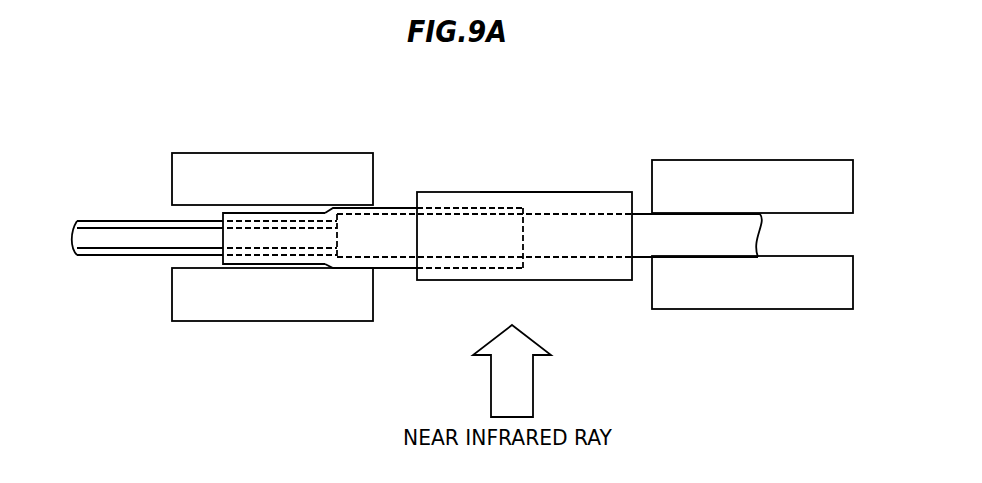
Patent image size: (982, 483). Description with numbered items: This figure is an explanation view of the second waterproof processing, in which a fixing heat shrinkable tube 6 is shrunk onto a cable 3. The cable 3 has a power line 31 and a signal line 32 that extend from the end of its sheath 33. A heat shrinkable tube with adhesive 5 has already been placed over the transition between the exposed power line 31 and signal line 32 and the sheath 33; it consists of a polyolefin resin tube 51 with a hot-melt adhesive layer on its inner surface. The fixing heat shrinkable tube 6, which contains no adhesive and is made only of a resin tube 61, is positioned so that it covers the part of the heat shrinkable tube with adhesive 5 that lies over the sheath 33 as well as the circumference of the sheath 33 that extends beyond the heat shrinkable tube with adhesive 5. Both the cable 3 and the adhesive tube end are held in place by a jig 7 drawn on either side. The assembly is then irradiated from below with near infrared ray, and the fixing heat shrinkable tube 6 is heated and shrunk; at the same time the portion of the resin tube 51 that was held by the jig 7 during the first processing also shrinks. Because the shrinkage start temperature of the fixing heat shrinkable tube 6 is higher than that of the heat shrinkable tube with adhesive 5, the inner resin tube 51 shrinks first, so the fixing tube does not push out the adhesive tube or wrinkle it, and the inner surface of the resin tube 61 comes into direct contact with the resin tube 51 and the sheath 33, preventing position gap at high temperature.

The cable 3 is at (744, 223).
The power line 31 is at (167, 238).
The signal line 32 is at (168, 252).
The sheath 33 is at (740, 248).
The heat shrinkable tube with adhesive 5 is at (398, 208).
The resin tube 51 is at (393, 267).
The fixing heat shrinkable tube 6 is at (581, 282).
The resin tube 61 is at (537, 192).
The jig 7 is at (273, 298).